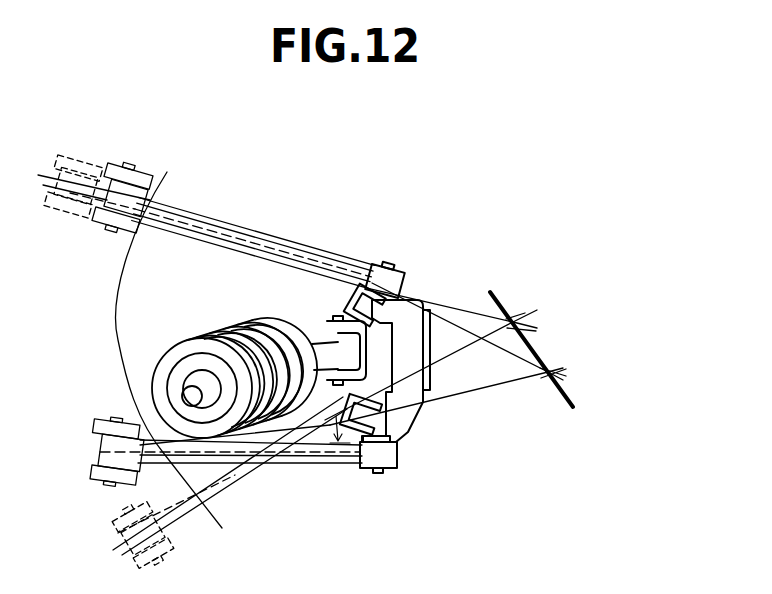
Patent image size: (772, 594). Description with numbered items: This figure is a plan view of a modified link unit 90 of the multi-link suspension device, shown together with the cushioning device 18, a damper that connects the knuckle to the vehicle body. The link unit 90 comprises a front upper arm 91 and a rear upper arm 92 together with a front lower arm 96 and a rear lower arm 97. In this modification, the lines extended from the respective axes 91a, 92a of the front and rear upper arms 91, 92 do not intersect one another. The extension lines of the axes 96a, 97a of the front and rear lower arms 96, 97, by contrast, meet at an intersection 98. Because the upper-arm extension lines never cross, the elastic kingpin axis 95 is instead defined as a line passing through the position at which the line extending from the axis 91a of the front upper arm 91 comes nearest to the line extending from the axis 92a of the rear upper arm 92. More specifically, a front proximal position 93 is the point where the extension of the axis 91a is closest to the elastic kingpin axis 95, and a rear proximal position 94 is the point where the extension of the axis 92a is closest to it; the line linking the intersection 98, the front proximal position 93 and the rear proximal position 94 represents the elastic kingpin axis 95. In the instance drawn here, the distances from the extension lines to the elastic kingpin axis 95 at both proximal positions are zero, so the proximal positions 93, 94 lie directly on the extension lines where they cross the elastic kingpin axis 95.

The link unit 90 is at (407, 170).
The cushioning device 18 is at (268, 320).
The rear lower arm 97 is at (280, 235).
The axis of rear lower arm 97a is at (331, 263).
The rear upper arm 92 is at (193, 240).
The axis of rear upper arm 92a is at (242, 250).
The front lower arm 96 is at (262, 468).
The axis of front lower arm 96a is at (321, 442).
The front upper arm 91 is at (187, 440).
The axis of front upper arm 91a is at (227, 433).
The elastic kingpin axis 95 is at (537, 350).
The intersection 98 is at (513, 322).
The rear proximal position 94 is at (614, 360).
The front proximal position 93 is at (548, 372).